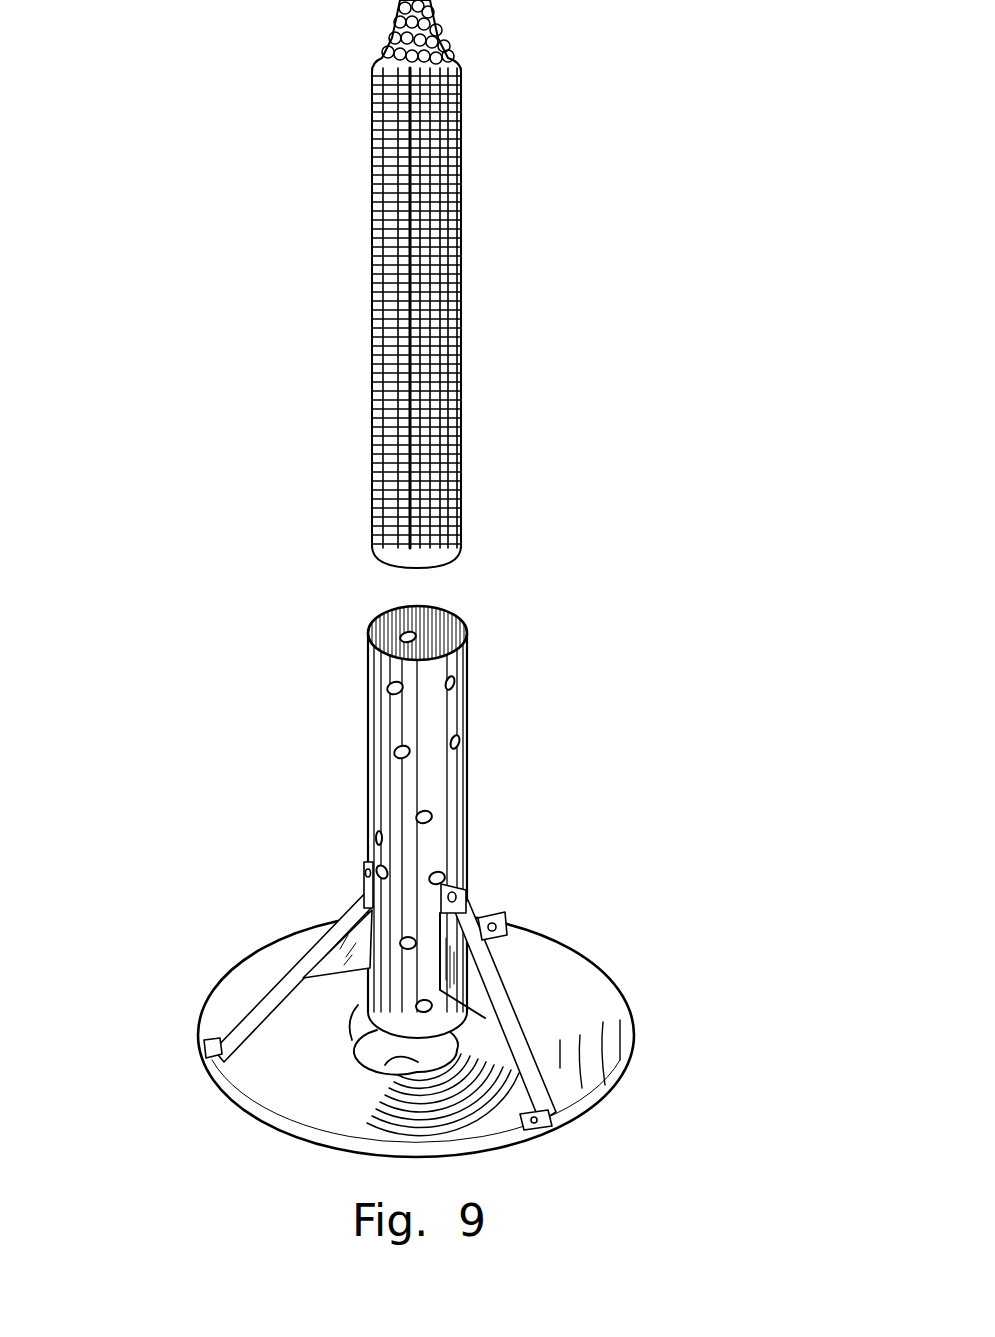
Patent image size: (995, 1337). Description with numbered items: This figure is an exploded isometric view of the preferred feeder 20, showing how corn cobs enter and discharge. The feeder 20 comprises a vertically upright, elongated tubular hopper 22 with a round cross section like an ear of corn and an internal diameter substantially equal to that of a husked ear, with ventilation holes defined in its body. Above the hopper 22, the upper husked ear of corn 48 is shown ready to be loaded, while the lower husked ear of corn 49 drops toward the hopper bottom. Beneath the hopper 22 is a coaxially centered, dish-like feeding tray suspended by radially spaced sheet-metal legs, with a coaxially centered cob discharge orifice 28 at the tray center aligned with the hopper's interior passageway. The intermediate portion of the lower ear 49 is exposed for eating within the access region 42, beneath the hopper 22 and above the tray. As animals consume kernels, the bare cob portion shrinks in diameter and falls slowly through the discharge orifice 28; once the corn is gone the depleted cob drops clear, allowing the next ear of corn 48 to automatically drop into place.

The feeder 20 is at (298, 625).
The hopper 22 is at (572, 975).
The cob discharge orifice 28 is at (383, 1062).
The access region 42 is at (373, 1097).
The upper husked ear of corn 48 is at (445, 132).
The lower husked ear of corn 49 is at (438, 458).